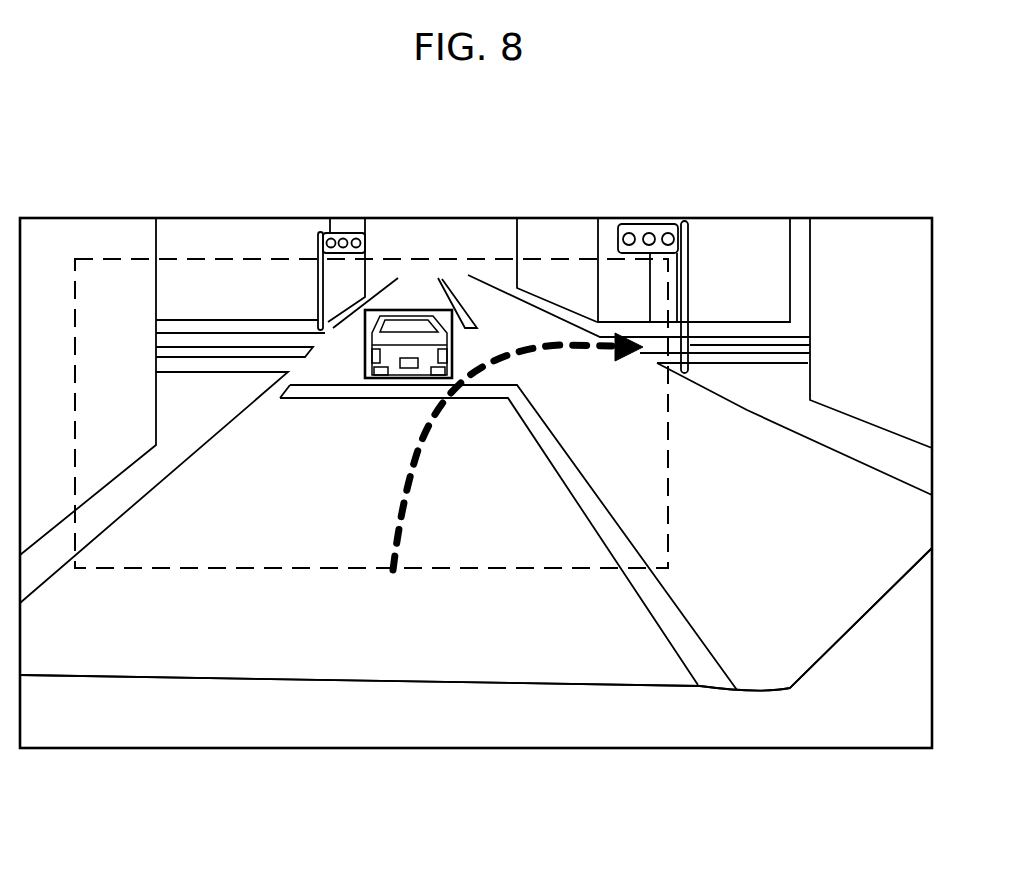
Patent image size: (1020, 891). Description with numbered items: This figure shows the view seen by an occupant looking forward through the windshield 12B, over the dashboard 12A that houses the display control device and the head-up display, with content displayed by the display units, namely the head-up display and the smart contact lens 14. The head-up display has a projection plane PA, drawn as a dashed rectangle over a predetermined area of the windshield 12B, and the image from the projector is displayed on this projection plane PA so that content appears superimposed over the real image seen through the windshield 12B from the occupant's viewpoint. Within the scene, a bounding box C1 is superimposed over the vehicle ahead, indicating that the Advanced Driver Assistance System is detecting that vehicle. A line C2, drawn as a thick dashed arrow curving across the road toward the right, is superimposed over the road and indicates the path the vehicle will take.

The smart contact lens 14 is at (712, 218).
The bounding box C1 is at (365, 342).
The line C2 is at (503, 355).
The projection plane PA is at (262, 565).
The dashboard 12A is at (452, 712).
The windshield 12B is at (573, 637).